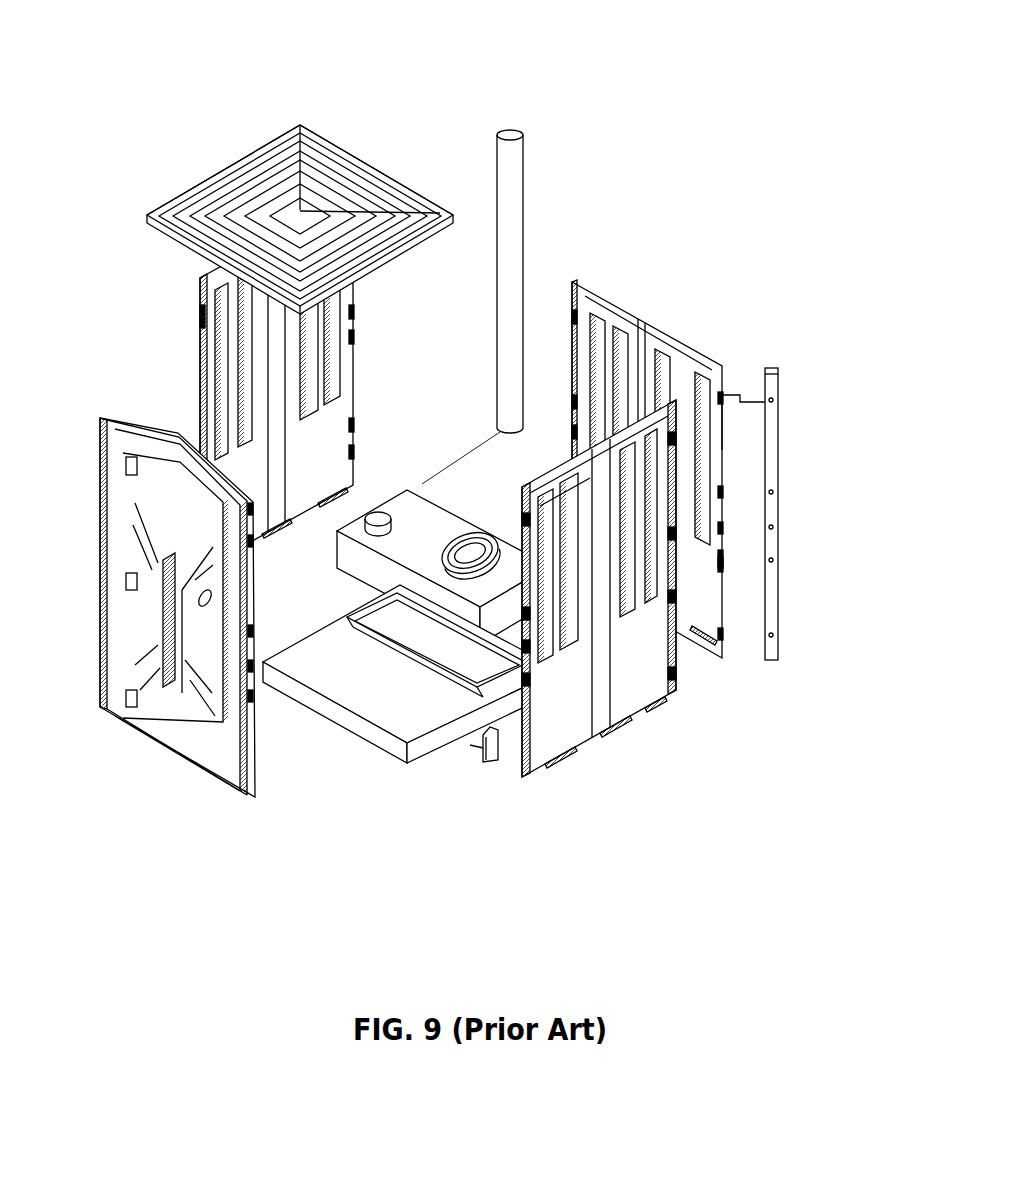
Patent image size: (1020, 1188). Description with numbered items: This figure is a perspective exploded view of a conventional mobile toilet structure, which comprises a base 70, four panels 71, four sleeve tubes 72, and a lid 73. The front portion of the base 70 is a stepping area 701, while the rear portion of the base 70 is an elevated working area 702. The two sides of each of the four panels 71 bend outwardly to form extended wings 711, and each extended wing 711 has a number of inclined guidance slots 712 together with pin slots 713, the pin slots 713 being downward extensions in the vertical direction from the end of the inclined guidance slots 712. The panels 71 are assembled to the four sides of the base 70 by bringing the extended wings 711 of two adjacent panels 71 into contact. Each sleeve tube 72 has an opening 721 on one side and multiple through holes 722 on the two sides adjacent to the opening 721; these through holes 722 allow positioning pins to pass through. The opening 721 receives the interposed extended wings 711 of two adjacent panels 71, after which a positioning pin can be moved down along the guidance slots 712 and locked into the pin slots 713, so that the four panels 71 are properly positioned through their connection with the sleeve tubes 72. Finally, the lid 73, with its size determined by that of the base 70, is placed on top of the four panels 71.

The base 70 is at (422, 672).
The stepping area 701 is at (376, 700).
The elevated working area 702 is at (397, 557).
The panel 71 is at (485, 437).
The extended wing 711 is at (203, 283).
The inclined guidance slot 712 is at (200, 310).
The pin slot 713 is at (197, 320).
The sleeve tube 72 is at (802, 471).
The opening 721 is at (765, 370).
The through hole 722 is at (770, 527).
The lid 73 is at (322, 150).